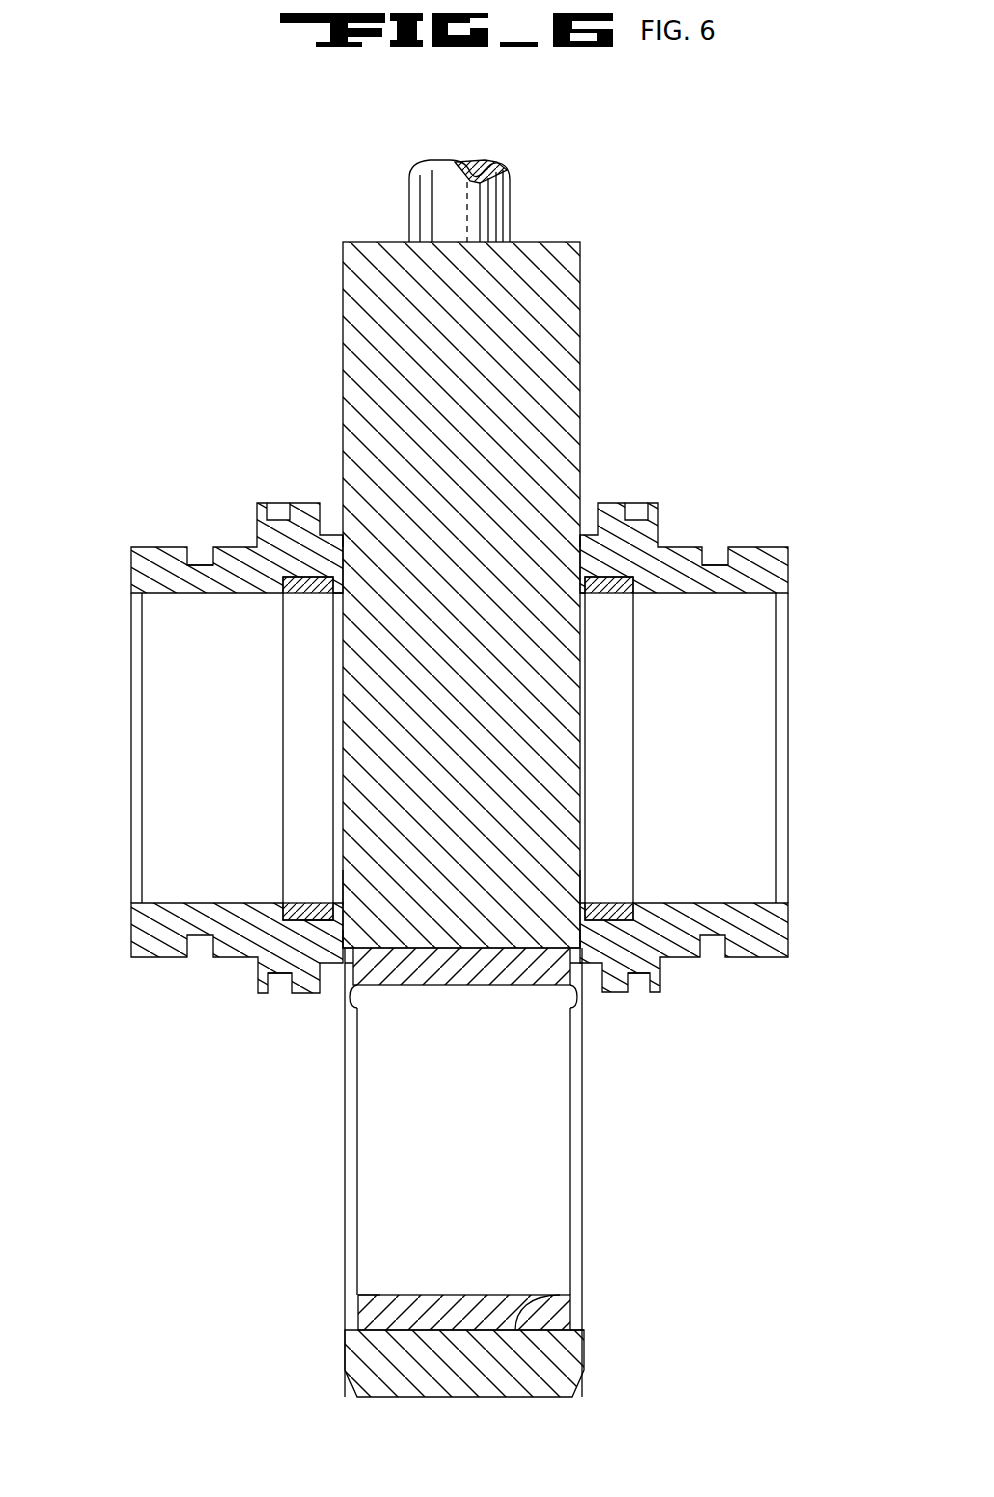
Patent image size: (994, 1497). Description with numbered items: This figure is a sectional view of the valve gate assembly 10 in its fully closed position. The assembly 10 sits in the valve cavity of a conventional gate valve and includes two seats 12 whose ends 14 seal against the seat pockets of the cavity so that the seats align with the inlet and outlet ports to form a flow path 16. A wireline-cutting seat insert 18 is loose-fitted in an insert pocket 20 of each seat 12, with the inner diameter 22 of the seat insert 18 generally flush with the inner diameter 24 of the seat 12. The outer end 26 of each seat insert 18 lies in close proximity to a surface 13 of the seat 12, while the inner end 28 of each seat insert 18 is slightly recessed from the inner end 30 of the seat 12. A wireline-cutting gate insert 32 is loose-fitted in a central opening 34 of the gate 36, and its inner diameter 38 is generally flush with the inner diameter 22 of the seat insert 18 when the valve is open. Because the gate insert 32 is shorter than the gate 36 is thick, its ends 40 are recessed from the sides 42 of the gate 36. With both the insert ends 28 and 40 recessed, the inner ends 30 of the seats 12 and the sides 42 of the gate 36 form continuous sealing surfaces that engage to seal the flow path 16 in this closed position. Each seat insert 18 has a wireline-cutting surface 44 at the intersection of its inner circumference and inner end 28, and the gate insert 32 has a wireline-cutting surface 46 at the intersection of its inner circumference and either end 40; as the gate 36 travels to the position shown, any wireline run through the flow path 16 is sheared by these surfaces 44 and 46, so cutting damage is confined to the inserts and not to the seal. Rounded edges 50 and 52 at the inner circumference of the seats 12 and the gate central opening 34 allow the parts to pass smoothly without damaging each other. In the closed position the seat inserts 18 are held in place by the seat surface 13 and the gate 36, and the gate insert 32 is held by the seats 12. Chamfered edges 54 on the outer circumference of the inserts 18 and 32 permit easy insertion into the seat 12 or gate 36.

The valve gate assembly 10 is at (518, 554).
The seat 12 is at (449, 907).
The seat surface 13 is at (305, 597).
The seat end 14 is at (131, 566).
The flow path 16 is at (142, 694).
The wireline-cutting seat insert 18 is at (305, 575).
The insert pocket 20 is at (303, 915).
The inner diameter of seat insert 22 is at (312, 905).
The inner diameter of seat 24 is at (142, 895).
The outer end of seat insert 26 is at (283, 590).
The inner end of seat insert 28 is at (585, 590).
The inner end of seat 30 is at (580, 545).
The wireline-cutting gate insert 32 is at (372, 1310).
The central opening of gate 34 is at (520, 1320).
The gate 36 is at (572, 338).
The inner diameter of gate insert 38 is at (397, 1293).
The end of gate insert 40 is at (347, 962).
The side of gate 42 is at (457, 1172).
The wireline-cutting surface of seat insert 44 is at (348, 868).
The wireline-cutting surface of gate insert 46 is at (568, 998).
The rounded edge of seat 50 is at (578, 938).
The rounded edge of gate central opening 52 is at (355, 1333).
The chamfered edge 54 is at (308, 916).